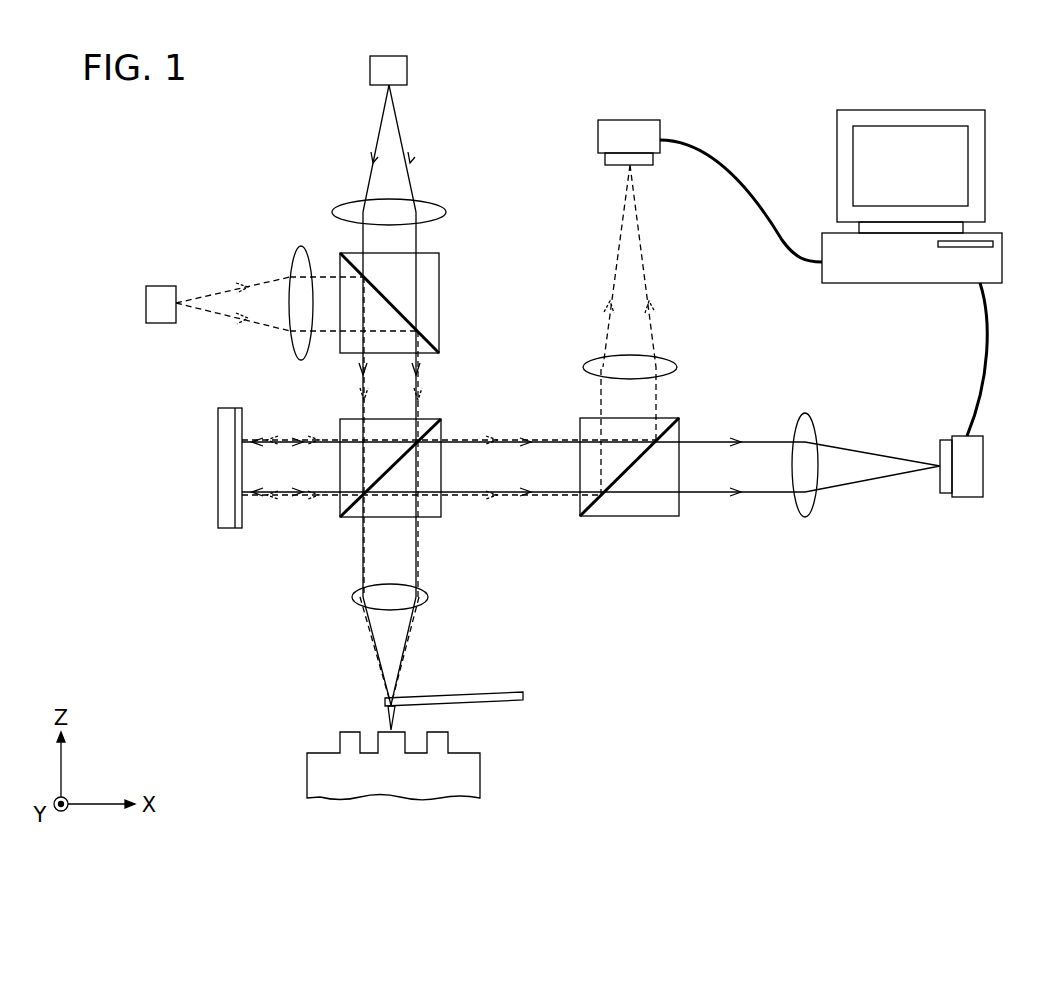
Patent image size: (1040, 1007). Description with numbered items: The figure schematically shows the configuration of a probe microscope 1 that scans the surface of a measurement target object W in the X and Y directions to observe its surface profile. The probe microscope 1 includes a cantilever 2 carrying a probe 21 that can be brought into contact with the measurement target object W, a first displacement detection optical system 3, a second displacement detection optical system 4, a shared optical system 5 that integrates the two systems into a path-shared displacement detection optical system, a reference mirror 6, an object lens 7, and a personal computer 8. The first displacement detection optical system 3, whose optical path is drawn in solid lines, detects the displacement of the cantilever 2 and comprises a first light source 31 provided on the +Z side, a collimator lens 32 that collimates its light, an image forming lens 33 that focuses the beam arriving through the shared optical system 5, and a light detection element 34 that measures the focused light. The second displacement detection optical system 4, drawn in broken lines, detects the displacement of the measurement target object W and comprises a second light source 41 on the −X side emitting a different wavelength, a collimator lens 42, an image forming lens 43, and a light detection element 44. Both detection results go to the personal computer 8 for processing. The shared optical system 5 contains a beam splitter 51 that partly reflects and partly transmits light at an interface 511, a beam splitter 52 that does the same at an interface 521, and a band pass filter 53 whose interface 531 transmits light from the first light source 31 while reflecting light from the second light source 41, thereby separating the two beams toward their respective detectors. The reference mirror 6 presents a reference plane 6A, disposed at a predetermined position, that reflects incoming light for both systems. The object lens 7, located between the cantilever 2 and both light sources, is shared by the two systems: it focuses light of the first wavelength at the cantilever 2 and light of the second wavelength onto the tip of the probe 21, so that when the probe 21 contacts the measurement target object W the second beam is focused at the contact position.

The probe microscope 1 is at (758, 110).
The cantilever 2 is at (470, 695).
The probe 21 is at (388, 712).
The first displacement detection optical system 3 is at (471, 100).
The first light source 31 is at (407, 70).
The collimator lens 32 is at (432, 208).
The image forming lens 33 is at (805, 515).
The light detection element 34 is at (967, 497).
The second displacement detection optical system 4 is at (265, 188).
The second light source 41 is at (163, 286).
The collimator lens 42 is at (297, 262).
The image forming lens 43 is at (677, 362).
The light detection element 44 is at (655, 148).
The shared optical system 5 is at (565, 319).
The beam splitter 51 is at (391, 281).
The interface 511 is at (356, 263).
The beam splitter 52 is at (408, 440).
The interface 521 is at (346, 500).
The band pass filter 53 is at (607, 448).
The interface 531 is at (600, 500).
The reference mirror 6 is at (212, 448).
The reference plane 6A is at (236, 410).
The object lens 7 is at (428, 597).
The personal computer 8 is at (863, 280).
The measurement target object W is at (470, 775).